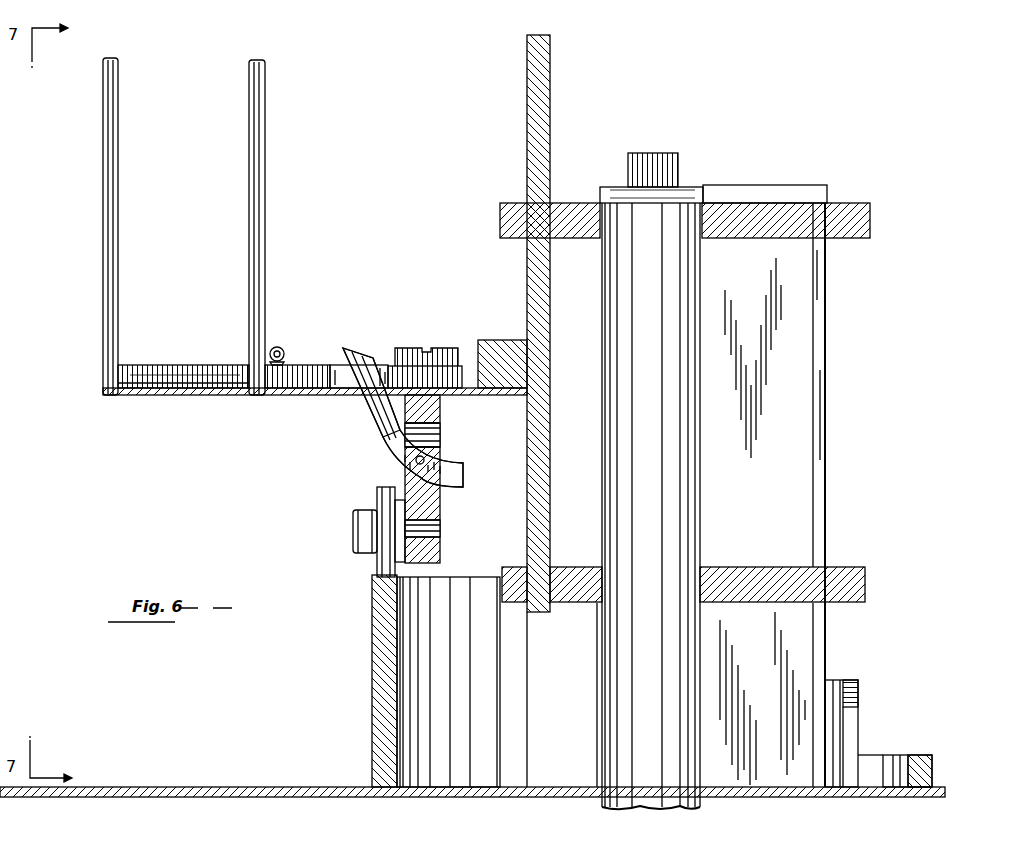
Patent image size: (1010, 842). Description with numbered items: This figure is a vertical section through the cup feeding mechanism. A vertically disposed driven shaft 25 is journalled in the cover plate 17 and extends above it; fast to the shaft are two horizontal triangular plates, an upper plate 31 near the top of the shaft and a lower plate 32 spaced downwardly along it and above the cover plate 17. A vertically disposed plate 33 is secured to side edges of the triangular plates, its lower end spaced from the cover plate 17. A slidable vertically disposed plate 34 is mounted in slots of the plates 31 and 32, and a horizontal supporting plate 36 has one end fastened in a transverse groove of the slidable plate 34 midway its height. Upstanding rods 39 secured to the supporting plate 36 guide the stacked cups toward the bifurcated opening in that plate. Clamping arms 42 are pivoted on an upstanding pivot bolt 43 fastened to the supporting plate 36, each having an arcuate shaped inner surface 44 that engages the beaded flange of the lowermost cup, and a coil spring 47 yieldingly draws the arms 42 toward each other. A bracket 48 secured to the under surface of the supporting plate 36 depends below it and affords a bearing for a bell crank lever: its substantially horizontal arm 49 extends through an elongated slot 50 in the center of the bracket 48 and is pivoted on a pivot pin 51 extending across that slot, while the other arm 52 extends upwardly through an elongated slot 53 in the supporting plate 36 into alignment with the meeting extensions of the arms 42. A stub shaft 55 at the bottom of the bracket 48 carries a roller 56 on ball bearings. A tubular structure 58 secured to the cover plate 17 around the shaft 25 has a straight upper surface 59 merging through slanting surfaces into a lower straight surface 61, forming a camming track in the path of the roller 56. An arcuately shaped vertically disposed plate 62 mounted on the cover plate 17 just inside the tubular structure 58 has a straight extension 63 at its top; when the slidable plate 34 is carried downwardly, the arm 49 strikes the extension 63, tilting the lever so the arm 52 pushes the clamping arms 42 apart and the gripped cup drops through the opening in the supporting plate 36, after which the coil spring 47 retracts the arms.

The cover plate 17 is at (238, 787).
The driven shaft 25 is at (703, 492).
The upper plate 31 is at (500, 220).
The lower plate 32 is at (866, 594).
The vertically disposed plate 33 is at (800, 442).
The slidable plate 34 is at (525, 86).
The supporting plate 36 is at (173, 396).
The rods 39 is at (105, 152).
The clamping arms 42 is at (180, 368).
The pivot bolt 43 is at (444, 347).
The arcuate shaped inner surface 44 is at (170, 380).
The coil spring 47 is at (280, 346).
The bracket 48 is at (442, 513).
The horizontal arm 49 is at (465, 473).
The elongated slot 50 is at (436, 446).
The pivot pin 51 is at (413, 466).
The arm 52 is at (372, 413).
The elongated slot 53 is at (338, 372).
The stub shaft 55 is at (352, 531).
The roller 56 is at (377, 497).
The tubular structure 58 is at (372, 660).
The upper surface 59 is at (478, 577).
The lower straight surface 61 is at (926, 756).
The arcuately shaped plate 62 is at (858, 696).
The straight extension 63 is at (832, 682).